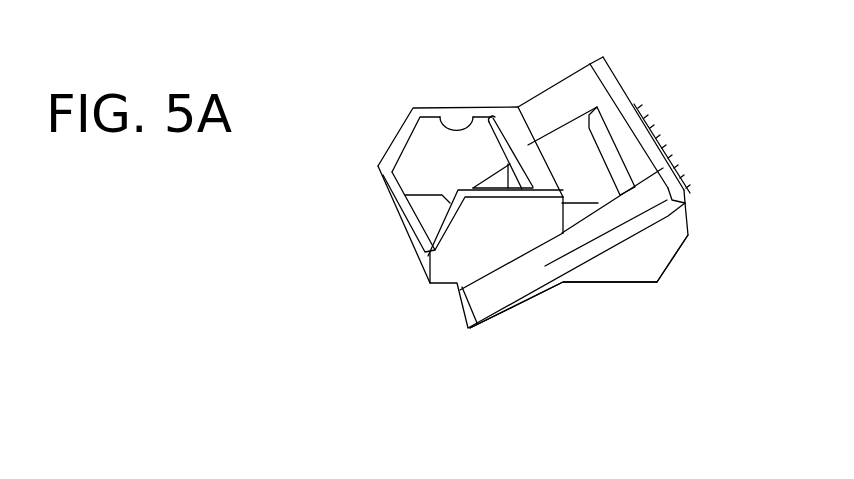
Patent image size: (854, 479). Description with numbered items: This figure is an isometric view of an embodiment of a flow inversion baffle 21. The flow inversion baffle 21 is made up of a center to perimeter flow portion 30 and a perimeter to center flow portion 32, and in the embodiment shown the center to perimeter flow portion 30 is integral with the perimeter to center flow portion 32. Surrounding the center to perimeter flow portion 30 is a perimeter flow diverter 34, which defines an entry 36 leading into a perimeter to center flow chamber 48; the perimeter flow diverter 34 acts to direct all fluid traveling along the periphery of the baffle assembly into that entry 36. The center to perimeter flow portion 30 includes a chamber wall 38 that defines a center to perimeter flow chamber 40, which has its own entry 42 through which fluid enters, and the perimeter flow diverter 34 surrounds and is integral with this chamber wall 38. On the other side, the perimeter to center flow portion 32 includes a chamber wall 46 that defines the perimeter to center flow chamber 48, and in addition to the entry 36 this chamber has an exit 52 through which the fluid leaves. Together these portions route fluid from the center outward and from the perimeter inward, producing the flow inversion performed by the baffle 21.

The flow inversion baffle 21 is at (372, 237).
The center to perimeter flow portion 30 is at (384, 142).
The perimeter to center flow portion 32 is at (670, 146).
The perimeter flow diverter 34 is at (562, 258).
The entry 36 is at (566, 134).
The chamber wall 38 is at (453, 262).
The center to perimeter flow chamber 40 is at (425, 172).
The entry 42 is at (442, 118).
The chamber wall 46 is at (642, 262).
The perimeter to center flow chamber 48 is at (572, 176).
The exit 52 is at (673, 262).